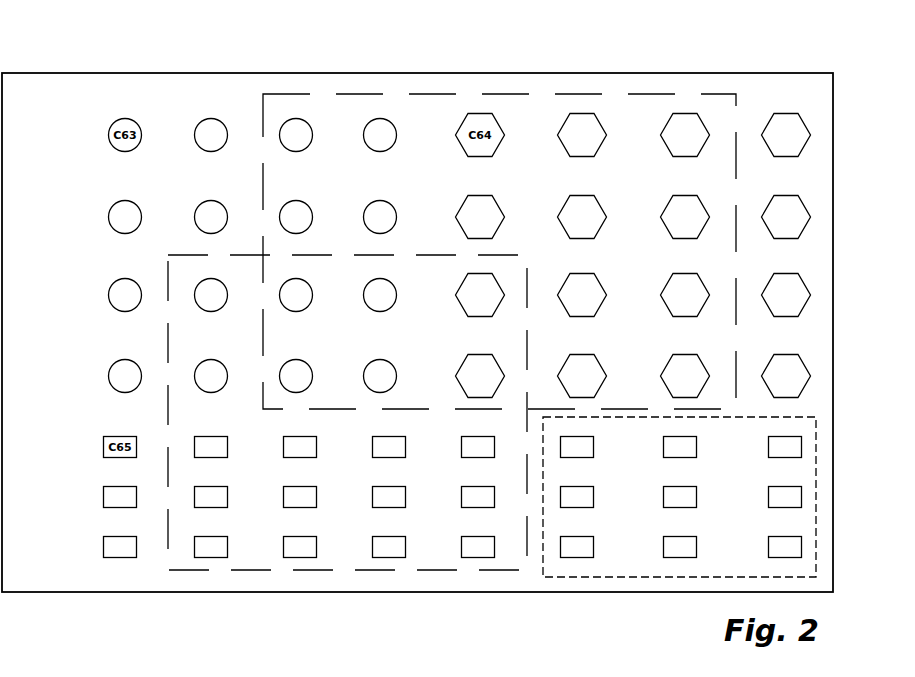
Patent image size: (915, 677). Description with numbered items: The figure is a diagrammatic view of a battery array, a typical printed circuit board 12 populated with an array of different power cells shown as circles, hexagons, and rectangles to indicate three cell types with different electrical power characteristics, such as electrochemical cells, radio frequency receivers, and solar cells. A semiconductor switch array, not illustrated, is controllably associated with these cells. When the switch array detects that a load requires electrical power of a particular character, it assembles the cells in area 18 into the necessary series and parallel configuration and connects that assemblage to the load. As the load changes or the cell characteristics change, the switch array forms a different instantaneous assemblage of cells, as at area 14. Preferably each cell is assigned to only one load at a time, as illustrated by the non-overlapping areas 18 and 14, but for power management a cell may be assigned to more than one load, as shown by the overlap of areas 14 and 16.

The substrate / circuit board 12 is at (108, 67).
The area 14 is at (260, 168).
The area 16 is at (168, 330).
The area 18 is at (788, 417).